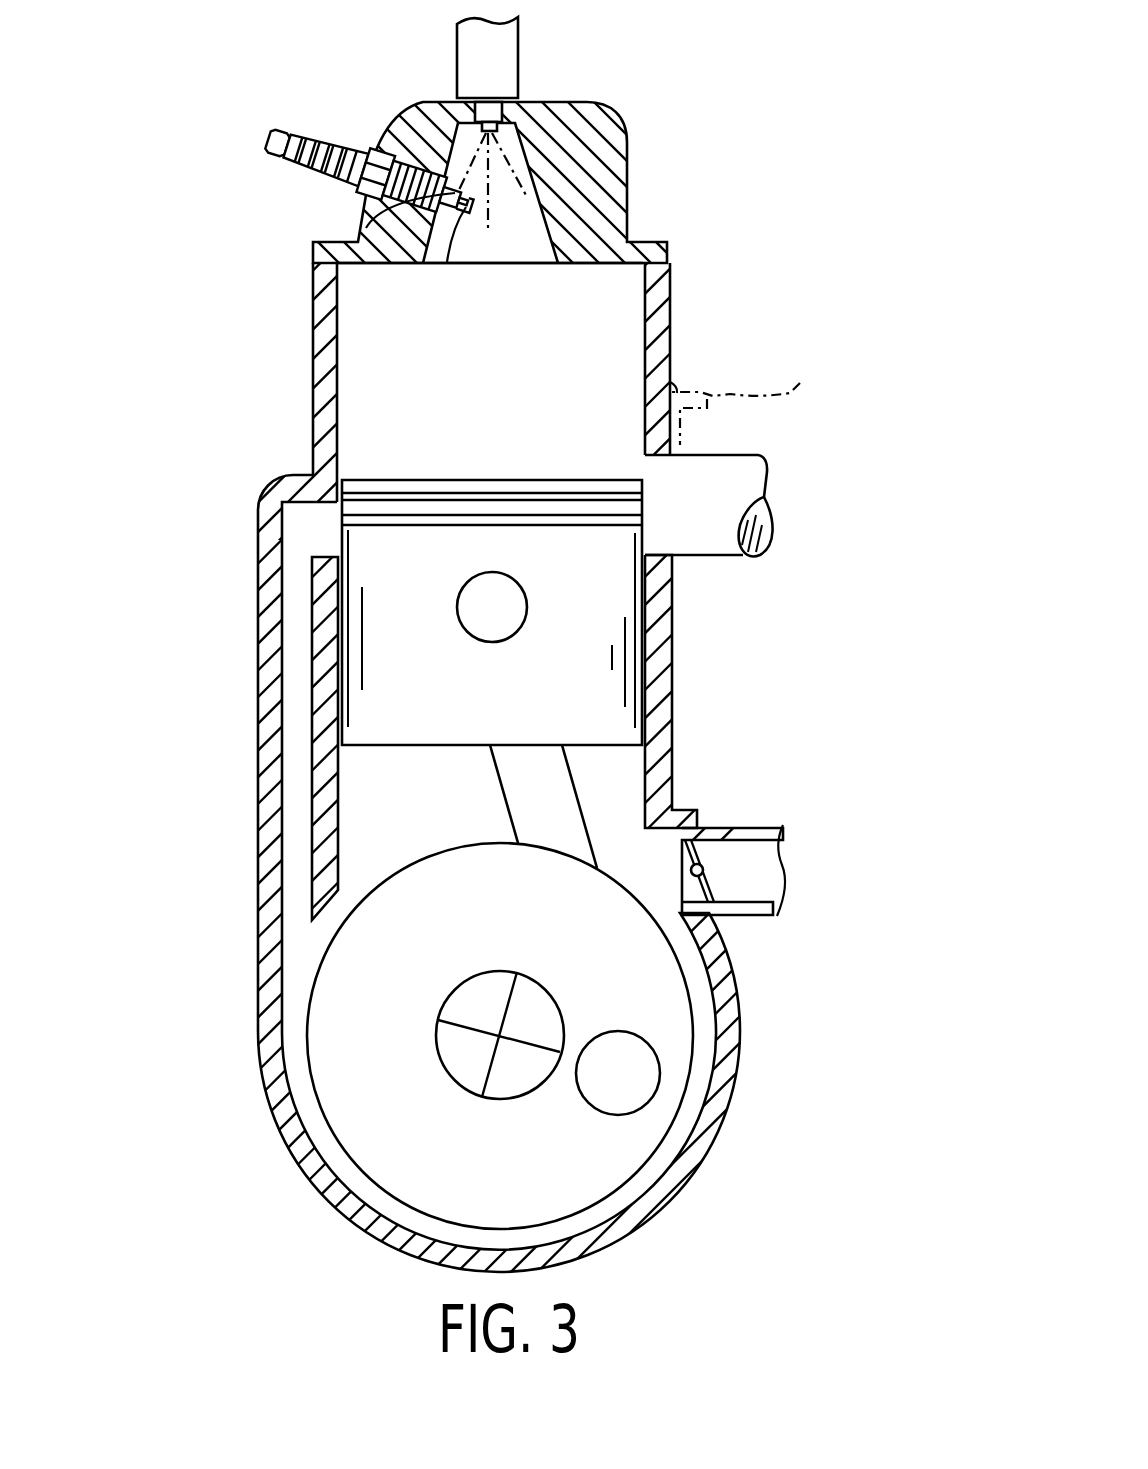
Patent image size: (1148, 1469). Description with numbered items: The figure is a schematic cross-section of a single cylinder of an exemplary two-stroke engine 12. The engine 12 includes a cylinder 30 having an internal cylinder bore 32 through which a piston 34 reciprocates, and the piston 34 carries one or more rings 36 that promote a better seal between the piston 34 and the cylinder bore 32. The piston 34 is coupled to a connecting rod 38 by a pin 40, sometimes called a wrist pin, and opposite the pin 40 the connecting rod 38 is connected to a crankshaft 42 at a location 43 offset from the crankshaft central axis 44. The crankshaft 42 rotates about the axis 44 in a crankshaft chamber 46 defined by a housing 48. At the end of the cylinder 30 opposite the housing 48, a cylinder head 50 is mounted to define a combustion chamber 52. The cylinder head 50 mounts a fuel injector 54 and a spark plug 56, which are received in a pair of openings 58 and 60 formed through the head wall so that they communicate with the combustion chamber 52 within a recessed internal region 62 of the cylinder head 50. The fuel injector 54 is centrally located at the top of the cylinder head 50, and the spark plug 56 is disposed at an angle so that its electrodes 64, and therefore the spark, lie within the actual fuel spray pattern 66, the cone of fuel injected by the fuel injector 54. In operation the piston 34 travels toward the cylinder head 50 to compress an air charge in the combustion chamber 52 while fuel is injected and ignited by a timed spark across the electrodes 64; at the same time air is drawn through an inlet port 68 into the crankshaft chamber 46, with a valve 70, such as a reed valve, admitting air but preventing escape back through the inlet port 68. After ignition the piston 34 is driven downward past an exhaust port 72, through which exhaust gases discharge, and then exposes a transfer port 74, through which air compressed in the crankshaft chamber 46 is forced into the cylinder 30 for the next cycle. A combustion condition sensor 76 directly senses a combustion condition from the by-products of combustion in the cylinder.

The two-stroke engine 12 is at (700, 317).
The cylinder 30 is at (670, 372).
The cylinder bore 32 is at (336, 381).
The piston 34 is at (503, 712).
The rings 36 is at (547, 500).
The connecting rod 38 is at (540, 810).
The pin 40 is at (480, 612).
The crankshaft 42 is at (593, 1182).
The location 43 is at (633, 1062).
The crankshaft central axis 44 is at (463, 1047).
The crankshaft chamber 46 is at (690, 1113).
The housing 48 is at (688, 1180).
The cylinder head 50 is at (597, 130).
The combustion chamber 52 is at (513, 275).
The fuel injector 54 is at (498, 55).
The spark plug 56 is at (320, 133).
The opening 58 is at (470, 108).
The opening 60 is at (372, 213).
The recessed internal region 62 is at (533, 243).
The electrodes 64 is at (447, 262).
The fuel spray pattern 66 is at (492, 218).
The inlet port 68 is at (745, 897).
The valve 70 is at (715, 837).
The exhaust port 72 is at (662, 468).
The transfer port 74 is at (296, 519).
The combustion condition sensor 76 is at (744, 398).